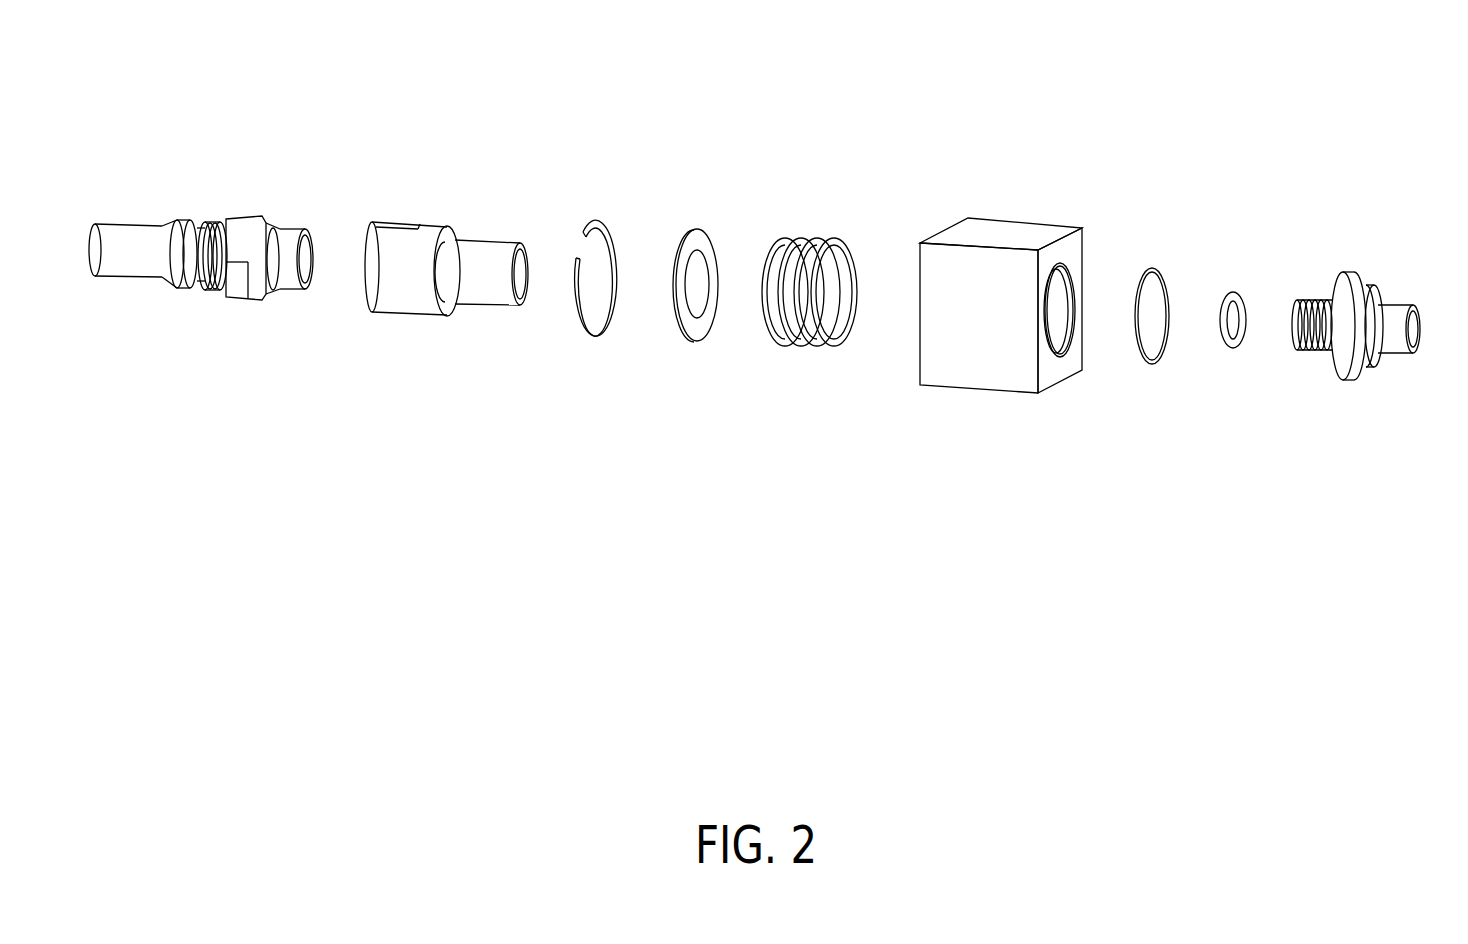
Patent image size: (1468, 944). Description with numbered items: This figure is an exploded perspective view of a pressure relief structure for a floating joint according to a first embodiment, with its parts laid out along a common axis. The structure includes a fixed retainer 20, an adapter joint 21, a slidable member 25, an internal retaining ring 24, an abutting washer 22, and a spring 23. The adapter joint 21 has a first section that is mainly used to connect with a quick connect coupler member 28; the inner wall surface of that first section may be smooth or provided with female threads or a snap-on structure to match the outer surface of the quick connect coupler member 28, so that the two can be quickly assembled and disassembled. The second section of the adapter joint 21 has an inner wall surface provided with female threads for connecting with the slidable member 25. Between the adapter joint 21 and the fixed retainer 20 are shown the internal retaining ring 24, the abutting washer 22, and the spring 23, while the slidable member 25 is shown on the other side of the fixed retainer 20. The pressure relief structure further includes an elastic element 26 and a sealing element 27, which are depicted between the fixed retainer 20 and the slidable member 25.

The fixed retainer 20 is at (967, 390).
The adapter joint 21 is at (403, 305).
The abutting washer 22 is at (690, 340).
The spring 23 is at (822, 240).
The internal retaining ring 24 is at (598, 223).
The slidable member 25 is at (1402, 307).
The elastic element 26 is at (1160, 270).
The sealing element 27 is at (1223, 347).
The quick connect coupler member 28 is at (137, 223).